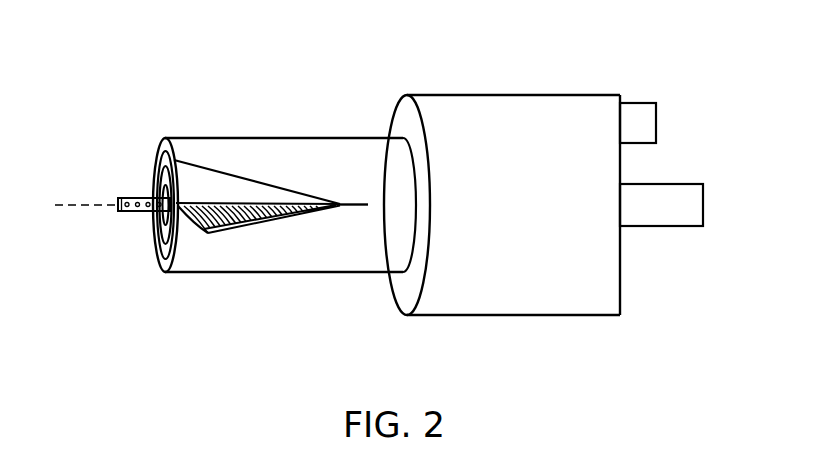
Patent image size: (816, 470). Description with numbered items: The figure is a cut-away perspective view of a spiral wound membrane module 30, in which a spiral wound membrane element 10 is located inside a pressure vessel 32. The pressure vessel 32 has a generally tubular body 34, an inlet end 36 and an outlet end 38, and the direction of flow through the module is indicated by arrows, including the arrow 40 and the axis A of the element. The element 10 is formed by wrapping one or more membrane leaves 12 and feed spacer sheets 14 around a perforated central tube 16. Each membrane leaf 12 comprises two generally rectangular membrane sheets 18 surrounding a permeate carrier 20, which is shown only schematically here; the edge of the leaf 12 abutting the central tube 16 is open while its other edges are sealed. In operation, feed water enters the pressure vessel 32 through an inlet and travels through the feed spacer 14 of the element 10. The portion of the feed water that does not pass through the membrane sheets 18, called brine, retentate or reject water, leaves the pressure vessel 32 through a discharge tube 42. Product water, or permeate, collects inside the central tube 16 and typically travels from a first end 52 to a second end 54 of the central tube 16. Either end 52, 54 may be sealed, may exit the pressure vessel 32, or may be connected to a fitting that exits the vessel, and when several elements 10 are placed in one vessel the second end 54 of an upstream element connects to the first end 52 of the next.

The spiral wound membrane element 10 is at (318, 137).
The membrane leaf 12 is at (355, 200).
The feed spacer sheet 14 is at (165, 263).
The perforated central tube 16 is at (138, 212).
The membrane sheet 18 is at (203, 180).
The permeate carrier 20 is at (257, 222).
The spiral wound membrane module 30 is at (542, 168).
The pressure vessel 32 is at (553, 120).
The tubular body 34 is at (400, 110).
The inlet end 36 is at (124, 145).
The outlet end 38 is at (638, 271).
The direction indicator 40 is at (112, 214).
The discharge tube 42 is at (640, 117).
The first end 52 is at (117, 200).
The second end 54 is at (685, 200).
The longitudinal axis A is at (60, 212).